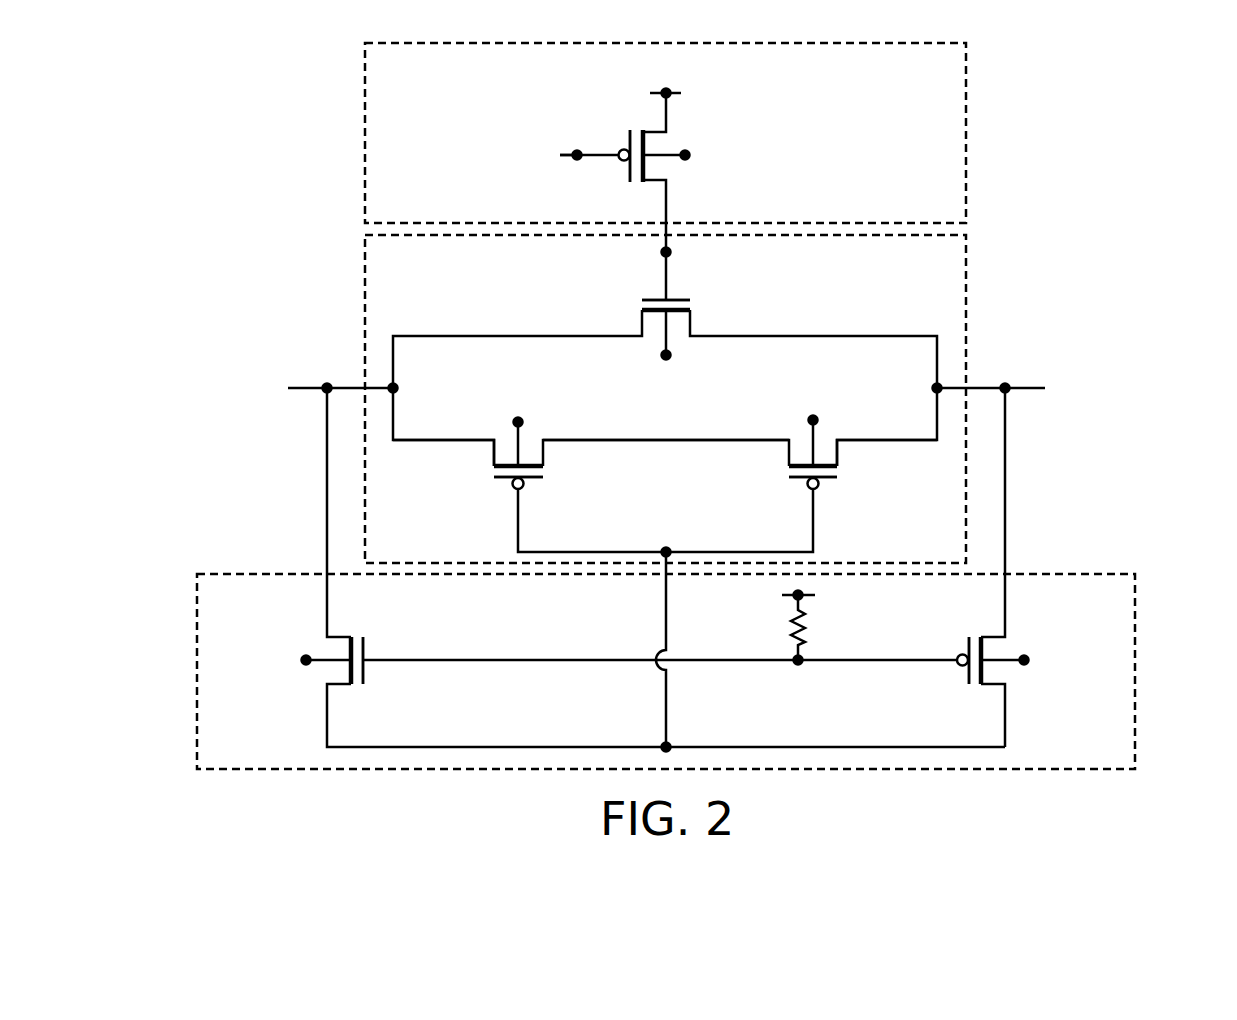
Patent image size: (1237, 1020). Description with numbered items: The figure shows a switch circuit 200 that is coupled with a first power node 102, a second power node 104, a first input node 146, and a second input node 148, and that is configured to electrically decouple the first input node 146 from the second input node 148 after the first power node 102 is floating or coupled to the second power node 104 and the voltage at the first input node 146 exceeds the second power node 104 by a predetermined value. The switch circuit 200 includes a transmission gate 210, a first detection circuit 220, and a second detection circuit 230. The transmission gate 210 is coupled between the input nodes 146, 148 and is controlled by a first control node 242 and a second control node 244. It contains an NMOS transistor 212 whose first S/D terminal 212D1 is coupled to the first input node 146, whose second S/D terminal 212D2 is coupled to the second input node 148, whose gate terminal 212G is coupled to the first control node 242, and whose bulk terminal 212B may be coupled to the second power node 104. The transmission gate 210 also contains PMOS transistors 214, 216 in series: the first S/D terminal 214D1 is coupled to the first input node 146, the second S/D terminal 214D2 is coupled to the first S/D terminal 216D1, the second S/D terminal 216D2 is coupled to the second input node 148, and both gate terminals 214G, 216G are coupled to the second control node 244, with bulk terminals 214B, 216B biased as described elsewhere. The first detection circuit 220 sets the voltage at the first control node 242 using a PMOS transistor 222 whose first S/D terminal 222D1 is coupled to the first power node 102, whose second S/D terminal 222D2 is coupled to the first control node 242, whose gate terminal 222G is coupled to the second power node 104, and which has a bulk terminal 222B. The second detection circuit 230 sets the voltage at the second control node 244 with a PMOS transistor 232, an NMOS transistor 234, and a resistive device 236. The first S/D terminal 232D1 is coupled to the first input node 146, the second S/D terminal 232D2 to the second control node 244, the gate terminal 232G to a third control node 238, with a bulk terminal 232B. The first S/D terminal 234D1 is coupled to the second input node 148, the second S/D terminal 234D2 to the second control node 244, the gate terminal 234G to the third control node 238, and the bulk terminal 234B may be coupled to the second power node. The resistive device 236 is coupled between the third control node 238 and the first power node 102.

The switch circuit 200 is at (1159, 108).
The first detection circuit 220 is at (966, 132).
The transmission gate 210 is at (966, 278).
The second detection circuit 230 is at (1137, 668).
The PMOS transistor 222 is at (650, 153).
The gate terminal 222G is at (613, 148).
The first S/D terminal 222D1 is at (667, 113).
The second S/D terminal 222D2 is at (667, 198).
The bulk terminal 222B is at (690, 155).
The first power node 102 is at (670, 90).
The second power node 104 is at (576, 154).
The NMOS transistor 212 is at (665, 352).
The gate terminal 212G is at (662, 272).
The first S/D terminal 212D1 is at (692, 323).
The second S/D terminal 212D2 is at (640, 322).
The bulk terminal 212B is at (666, 360).
The first control node 242 is at (670, 252).
The second control node 244 is at (668, 548).
The PMOS transistor 216 is at (584, 463).
The gate terminal 216G is at (515, 491).
The first S/D terminal 216D1 is at (545, 450).
The second S/D terminal 216D2 is at (494, 454).
The bulk terminal 216B is at (518, 420).
The PMOS transistor 214 is at (750, 468).
The gate terminal 214G is at (816, 491).
The first S/D terminal 214D1 is at (840, 452).
The second S/D terminal 214D2 is at (786, 454).
The bulk terminal 214B is at (815, 416).
The second input node 148 is at (327, 386).
The first input node 146 is at (1005, 386).
The NMOS transistor 234 is at (606, 570).
The gate terminal 234G is at (366, 652).
The first S/D terminal 234D1 is at (327, 613).
The second S/D terminal 234D2 is at (400, 720).
The bulk terminal 234B is at (304, 660).
The resistive device 236 is at (790, 625).
The third control node 238 is at (796, 670).
The PMOS transistor 232 is at (987, 567).
The gate terminal 232G is at (958, 654).
The first S/D terminal 232D1 is at (1007, 613).
The second S/D terminal 232D2 is at (1007, 718).
The bulk terminal 232B is at (1030, 660).